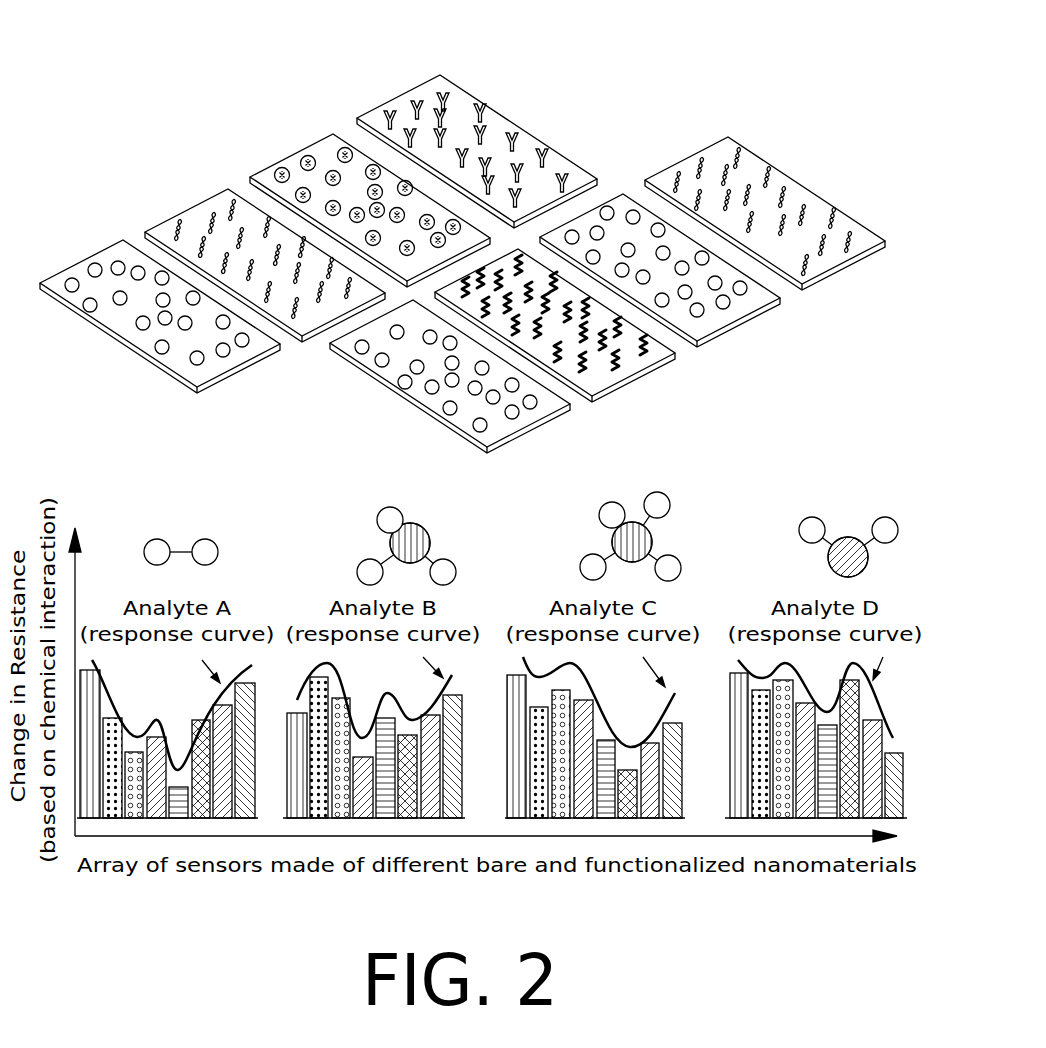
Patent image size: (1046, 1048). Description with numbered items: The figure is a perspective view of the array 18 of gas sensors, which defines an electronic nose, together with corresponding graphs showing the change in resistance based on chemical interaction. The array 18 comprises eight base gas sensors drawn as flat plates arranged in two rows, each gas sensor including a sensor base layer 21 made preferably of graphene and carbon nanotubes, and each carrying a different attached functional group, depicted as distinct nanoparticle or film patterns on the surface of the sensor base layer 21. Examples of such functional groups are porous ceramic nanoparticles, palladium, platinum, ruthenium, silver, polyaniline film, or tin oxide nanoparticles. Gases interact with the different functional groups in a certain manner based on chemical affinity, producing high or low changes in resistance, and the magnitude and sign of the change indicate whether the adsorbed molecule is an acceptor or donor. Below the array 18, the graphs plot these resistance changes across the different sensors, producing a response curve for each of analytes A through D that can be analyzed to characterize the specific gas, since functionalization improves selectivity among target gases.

The array 18 is at (620, 74).
The sensor base layer 21 is at (530, 143).